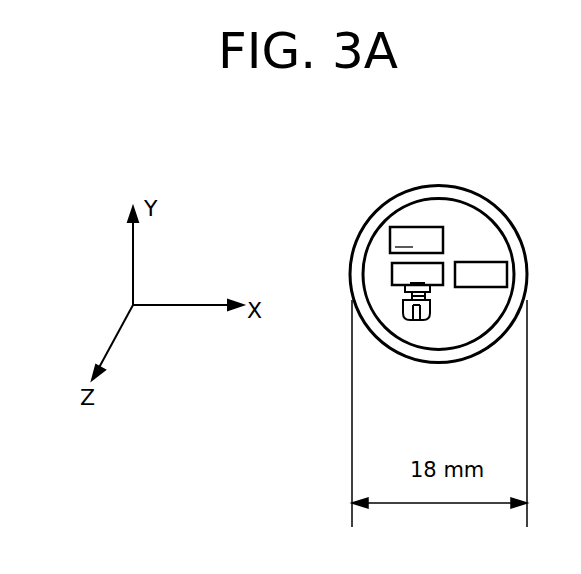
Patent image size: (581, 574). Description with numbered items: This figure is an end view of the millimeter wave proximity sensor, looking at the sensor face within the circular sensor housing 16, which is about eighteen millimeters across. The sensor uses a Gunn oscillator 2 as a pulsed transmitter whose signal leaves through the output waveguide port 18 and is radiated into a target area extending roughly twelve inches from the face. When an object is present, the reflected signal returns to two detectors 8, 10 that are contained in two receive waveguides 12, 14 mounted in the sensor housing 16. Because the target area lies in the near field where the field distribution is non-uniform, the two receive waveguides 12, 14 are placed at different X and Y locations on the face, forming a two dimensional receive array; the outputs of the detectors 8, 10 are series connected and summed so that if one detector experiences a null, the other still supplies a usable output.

The Gunn oscillator 2 is at (402, 300).
The detector 8 is at (413, 247).
The detector 10 is at (487, 278).
The receive waveguide 12 is at (388, 237).
The receive waveguide 14 is at (490, 267).
The sensor housing 16 is at (410, 186).
The output waveguide port 18 is at (392, 279).